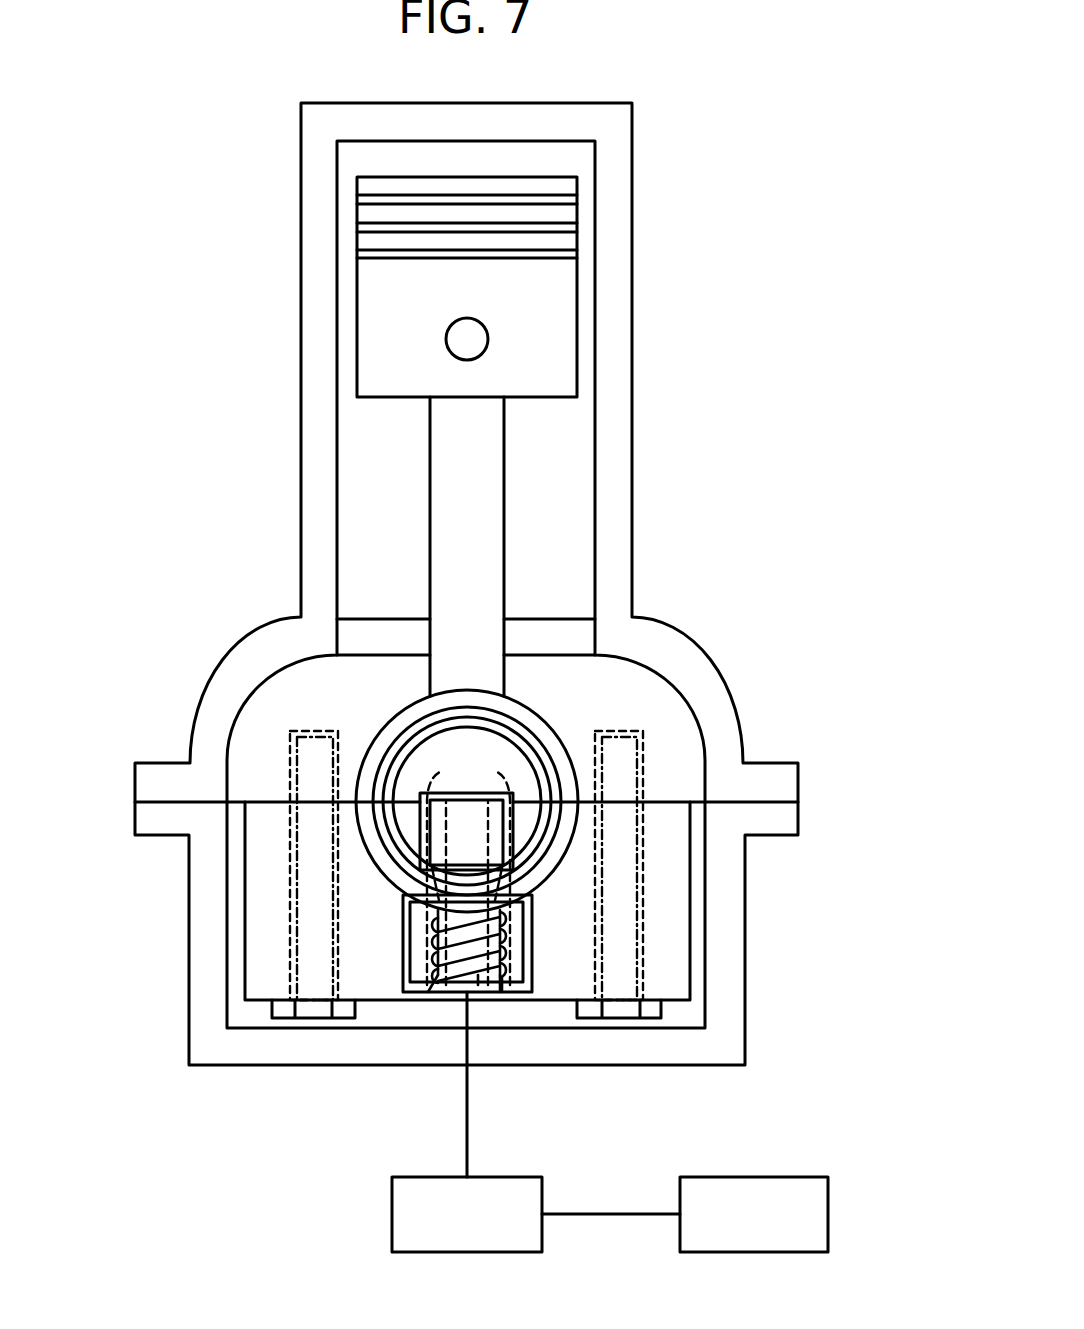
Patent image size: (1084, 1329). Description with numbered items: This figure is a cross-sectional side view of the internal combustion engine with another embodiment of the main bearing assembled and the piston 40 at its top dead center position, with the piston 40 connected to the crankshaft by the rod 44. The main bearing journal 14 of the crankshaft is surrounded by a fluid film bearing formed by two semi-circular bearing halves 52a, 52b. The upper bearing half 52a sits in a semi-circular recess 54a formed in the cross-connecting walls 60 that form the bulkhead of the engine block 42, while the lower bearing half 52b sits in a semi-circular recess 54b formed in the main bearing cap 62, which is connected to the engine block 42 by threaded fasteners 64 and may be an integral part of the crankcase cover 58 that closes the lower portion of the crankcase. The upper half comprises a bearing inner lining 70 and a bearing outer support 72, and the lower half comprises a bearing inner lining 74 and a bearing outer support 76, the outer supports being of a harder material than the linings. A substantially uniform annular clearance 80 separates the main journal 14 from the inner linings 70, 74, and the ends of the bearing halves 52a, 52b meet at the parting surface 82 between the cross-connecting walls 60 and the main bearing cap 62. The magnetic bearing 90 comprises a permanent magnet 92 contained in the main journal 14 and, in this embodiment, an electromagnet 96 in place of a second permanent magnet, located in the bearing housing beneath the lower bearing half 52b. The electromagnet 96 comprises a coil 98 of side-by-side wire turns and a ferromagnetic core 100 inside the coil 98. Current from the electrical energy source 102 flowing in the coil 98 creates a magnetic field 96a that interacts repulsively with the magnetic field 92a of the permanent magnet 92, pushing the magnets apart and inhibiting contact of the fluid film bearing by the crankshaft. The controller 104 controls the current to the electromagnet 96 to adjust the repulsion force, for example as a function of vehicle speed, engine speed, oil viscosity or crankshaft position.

The main bearing journal 14 is at (452, 756).
The piston 40 is at (452, 300).
The engine block 42 is at (612, 388).
The connecting rod 44 is at (452, 437).
The bearing half 52a is at (368, 718).
The bearing half 52b is at (445, 957).
The semi-circular recess/bore 54a is at (397, 713).
The semi-circular recess/bore 54b is at (394, 910).
The crankcase cover 58 is at (215, 1028).
The cross-connecting walls 60 is at (242, 755).
The main bearing cap 62 is at (649, 840).
The threaded fasteners 64 is at (315, 898).
The bearing inner lining 70 is at (490, 707).
The bearing outer support 72 is at (527, 720).
The bearing inner lining 74 is at (528, 882).
The bearing outer support 76 is at (489, 943).
The annular clearance 80 is at (525, 750).
The parting surface 82 is at (762, 802).
The magnetic bearing 90 is at (382, 991).
The permanent magnet 92 is at (466, 888).
The magnetic field 92a is at (468, 875).
The electromagnet 96 is at (440, 1005).
The magnetic field 96a is at (428, 985).
The coil 98 is at (502, 990).
The core 100 is at (476, 985).
The electrical energy source 102 is at (536, 1122).
The controller 104 is at (754, 1214).